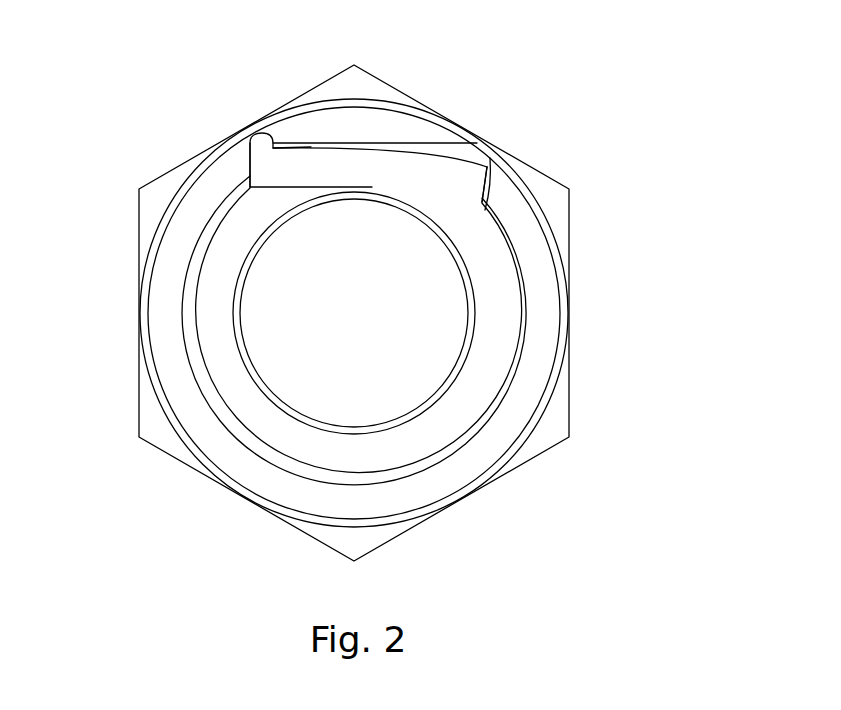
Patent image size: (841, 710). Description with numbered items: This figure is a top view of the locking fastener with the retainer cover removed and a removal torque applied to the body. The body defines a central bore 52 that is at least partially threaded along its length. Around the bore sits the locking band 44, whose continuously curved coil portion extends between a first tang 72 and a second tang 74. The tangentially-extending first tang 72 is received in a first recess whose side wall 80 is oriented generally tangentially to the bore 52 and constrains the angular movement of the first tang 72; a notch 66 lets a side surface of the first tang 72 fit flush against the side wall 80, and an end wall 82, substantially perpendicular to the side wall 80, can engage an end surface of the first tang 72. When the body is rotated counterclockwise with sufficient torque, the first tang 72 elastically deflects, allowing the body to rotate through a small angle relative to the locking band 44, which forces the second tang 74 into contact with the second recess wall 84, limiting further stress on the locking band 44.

The locking band 44 is at (210, 383).
The bore 52 is at (285, 330).
The notch 66 is at (257, 136).
The first tang 72 is at (318, 170).
The second tang 74 is at (471, 165).
The side wall 80 is at (311, 147).
The end wall 82 is at (247, 165).
The second recess wall 84 is at (490, 184).